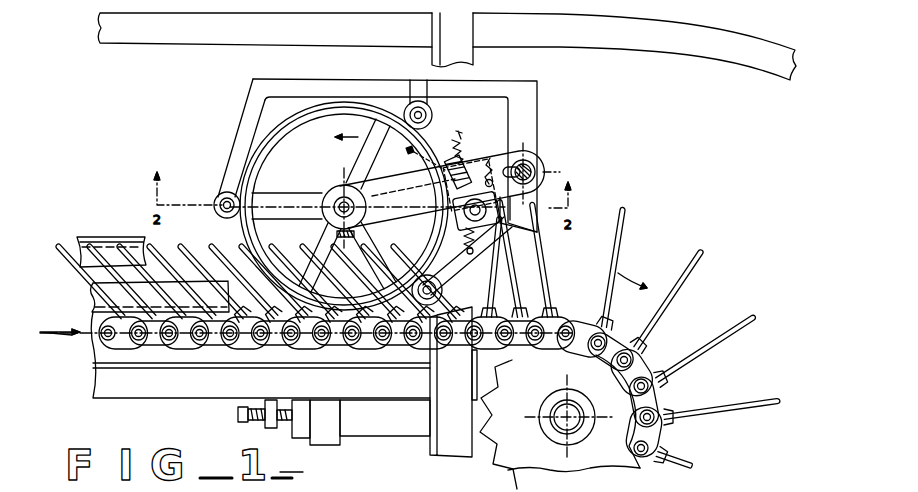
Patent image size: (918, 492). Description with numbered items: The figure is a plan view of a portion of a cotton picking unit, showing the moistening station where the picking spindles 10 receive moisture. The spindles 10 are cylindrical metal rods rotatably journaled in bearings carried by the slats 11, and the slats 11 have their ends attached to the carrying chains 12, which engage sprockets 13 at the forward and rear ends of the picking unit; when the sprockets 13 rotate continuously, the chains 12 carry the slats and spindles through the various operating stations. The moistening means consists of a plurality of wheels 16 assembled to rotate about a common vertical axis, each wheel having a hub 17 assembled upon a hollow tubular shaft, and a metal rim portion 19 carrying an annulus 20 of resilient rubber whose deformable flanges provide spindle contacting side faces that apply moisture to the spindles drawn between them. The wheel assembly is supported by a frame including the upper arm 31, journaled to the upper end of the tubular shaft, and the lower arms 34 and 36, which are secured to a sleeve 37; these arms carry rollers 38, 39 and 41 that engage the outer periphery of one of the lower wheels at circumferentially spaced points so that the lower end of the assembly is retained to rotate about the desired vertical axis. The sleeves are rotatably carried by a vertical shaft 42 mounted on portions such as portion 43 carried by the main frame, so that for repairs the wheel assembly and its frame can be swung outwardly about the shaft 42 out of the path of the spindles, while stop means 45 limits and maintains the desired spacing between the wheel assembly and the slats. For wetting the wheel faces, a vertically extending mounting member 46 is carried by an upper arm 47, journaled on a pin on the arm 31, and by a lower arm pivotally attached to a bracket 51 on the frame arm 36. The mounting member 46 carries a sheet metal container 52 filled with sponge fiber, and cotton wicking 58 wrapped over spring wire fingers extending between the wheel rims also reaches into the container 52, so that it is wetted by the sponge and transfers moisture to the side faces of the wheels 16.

The picking spindles 10 is at (680, 283).
The slats 11 is at (647, 351).
The carrying chains 12 is at (545, 345).
The sprockets 13 is at (520, 465).
The wheels 16 is at (265, 147).
The hub 17 is at (325, 197).
The metal portion of the wheel rim 19 is at (308, 118).
The annulus 20 is at (258, 150).
The upper arm 31 is at (390, 210).
The arm 34 is at (327, 83).
The arm 36 is at (480, 256).
The sleeve 37 is at (537, 162).
The roller 38 is at (222, 195).
The roller 39 is at (433, 114).
The roller 41 is at (440, 307).
The vertical shaft 42 is at (547, 170).
The portion 43 is at (441, 447).
The stop means 45 is at (338, 235).
The mounting member 46 is at (466, 150).
The upper arm 47 is at (485, 162).
The bracket 51 is at (510, 233).
The container 52 is at (458, 141).
The cotton wicking 58 is at (410, 153).